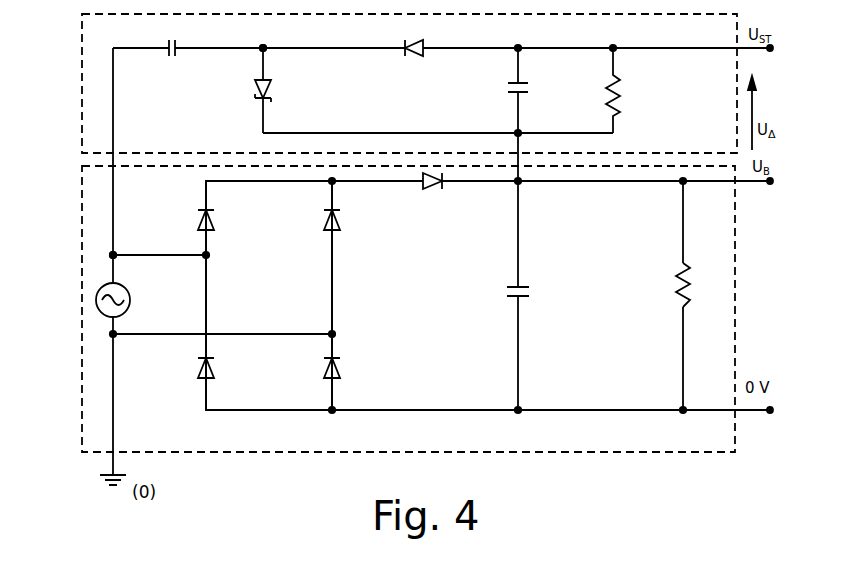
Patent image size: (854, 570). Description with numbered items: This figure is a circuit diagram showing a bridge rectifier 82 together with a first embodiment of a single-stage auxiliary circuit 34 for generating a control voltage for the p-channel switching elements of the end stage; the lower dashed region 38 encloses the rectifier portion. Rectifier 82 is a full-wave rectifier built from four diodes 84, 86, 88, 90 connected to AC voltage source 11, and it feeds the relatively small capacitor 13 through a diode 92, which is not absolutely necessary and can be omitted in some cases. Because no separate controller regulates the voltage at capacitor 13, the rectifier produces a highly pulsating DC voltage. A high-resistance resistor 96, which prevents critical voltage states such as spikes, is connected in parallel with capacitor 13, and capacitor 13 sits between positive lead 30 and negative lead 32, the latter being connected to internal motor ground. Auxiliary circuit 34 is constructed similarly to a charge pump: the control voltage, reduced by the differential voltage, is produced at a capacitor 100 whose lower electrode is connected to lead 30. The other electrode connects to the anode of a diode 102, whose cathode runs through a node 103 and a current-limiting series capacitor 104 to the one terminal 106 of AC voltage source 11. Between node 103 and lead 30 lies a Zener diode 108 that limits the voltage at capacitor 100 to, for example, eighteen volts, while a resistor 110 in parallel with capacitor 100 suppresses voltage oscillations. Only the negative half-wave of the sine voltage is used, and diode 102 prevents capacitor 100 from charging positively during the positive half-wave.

The auxiliary circuit 34 is at (82, 70).
The rectifier supply circuit 38 is at (82, 194).
The series capacitor 104 is at (172, 58).
The node 103 is at (266, 46).
The Zener diode 108 is at (272, 90).
The diode 102 is at (408, 57).
The capacitor 100 is at (530, 85).
The resistor 110 is at (622, 96).
The AC voltage source 11 is at (95, 306).
The terminal 106 is at (114, 254).
The bridge rectifier 82 is at (292, 291).
The diode 84 is at (212, 222).
The diode 86 is at (338, 222).
The diode 88 is at (340, 368).
The diode 90 is at (212, 372).
The diode 92 is at (426, 184).
The positive lead 30 is at (568, 182).
The capacitor 13 is at (524, 292).
The high-resistance resistor 96 is at (677, 290).
The negative lead 32 is at (447, 410).